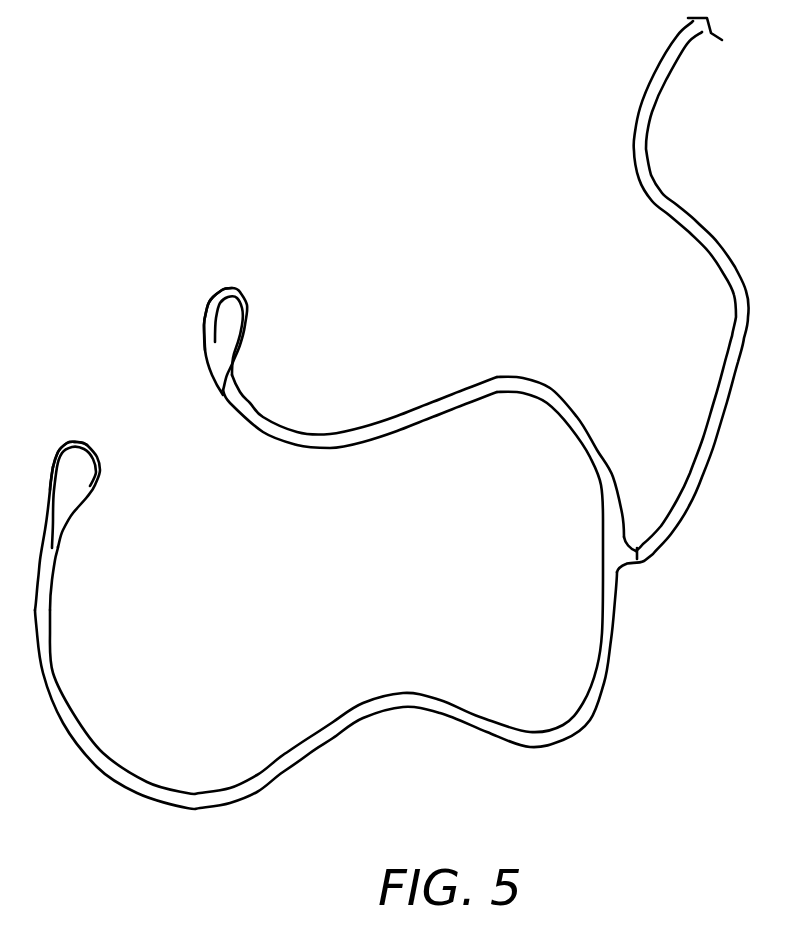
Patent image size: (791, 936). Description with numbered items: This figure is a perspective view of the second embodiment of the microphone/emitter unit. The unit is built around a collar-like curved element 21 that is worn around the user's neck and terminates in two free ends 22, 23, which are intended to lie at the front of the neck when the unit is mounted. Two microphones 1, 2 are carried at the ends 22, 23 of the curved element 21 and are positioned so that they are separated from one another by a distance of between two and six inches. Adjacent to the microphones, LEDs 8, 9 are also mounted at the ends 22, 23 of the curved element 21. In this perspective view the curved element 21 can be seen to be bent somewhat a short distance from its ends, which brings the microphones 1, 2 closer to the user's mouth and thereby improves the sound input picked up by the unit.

The microphone 1 is at (230, 318).
The microphone 2 is at (76, 478).
The LED 8 is at (200, 317).
The LED 9 is at (53, 462).
The curved element 21 is at (465, 717).
The free end 22 is at (243, 386).
The free end 23 is at (56, 547).